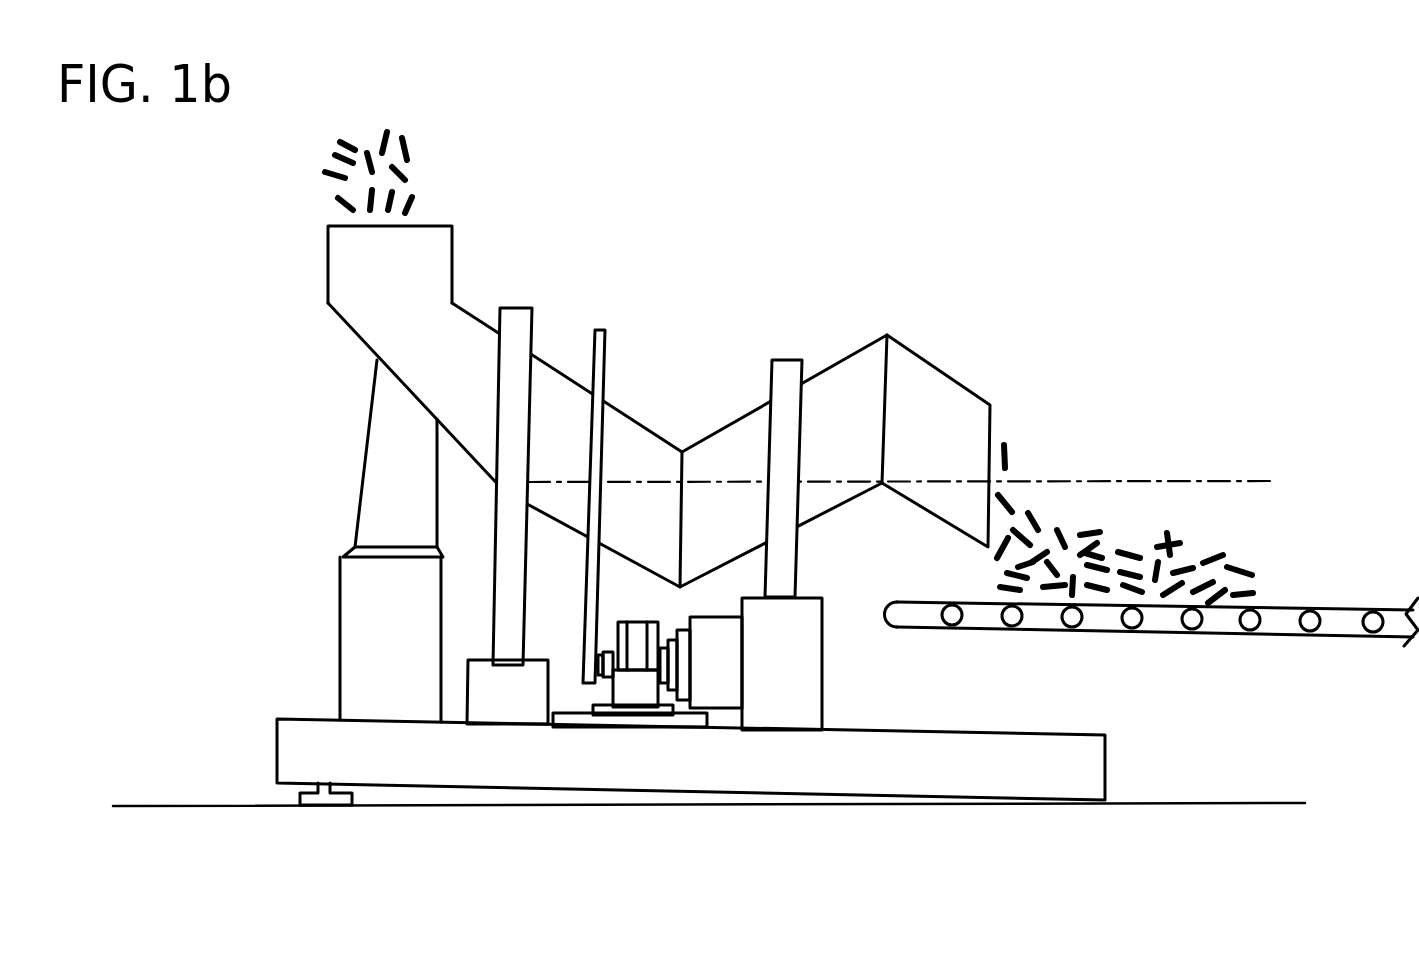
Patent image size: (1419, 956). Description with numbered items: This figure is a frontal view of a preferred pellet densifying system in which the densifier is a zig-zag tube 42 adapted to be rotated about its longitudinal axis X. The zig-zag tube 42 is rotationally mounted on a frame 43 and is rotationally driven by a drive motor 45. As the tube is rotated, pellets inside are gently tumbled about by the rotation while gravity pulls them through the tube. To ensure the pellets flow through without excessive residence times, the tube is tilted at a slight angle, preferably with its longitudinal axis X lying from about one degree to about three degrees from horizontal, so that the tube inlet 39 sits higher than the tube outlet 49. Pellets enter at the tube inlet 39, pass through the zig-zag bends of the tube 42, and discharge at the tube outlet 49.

The tube inlet 39 is at (425, 222).
The zig-zag tube 42 is at (643, 422).
The frame 43 is at (488, 767).
The drive motor 45 is at (717, 697).
The tube outlet 49 is at (993, 413).
The longitudinal axis X is at (1218, 480).